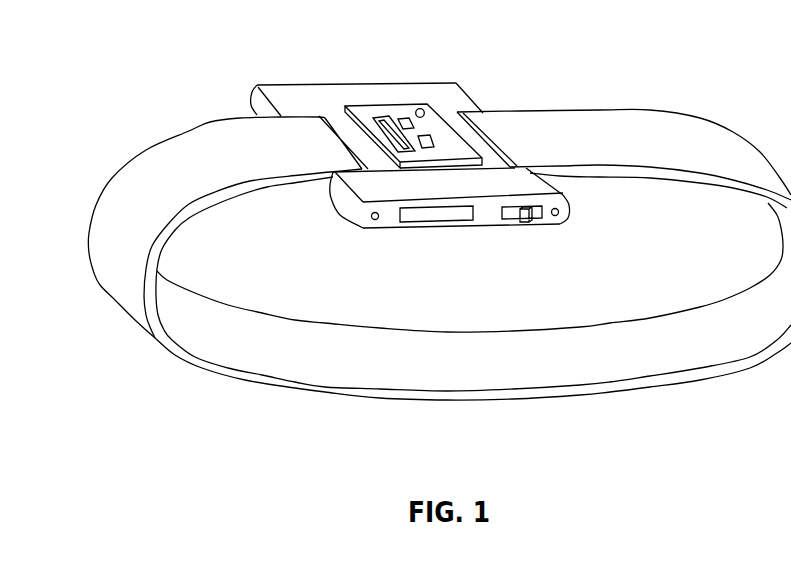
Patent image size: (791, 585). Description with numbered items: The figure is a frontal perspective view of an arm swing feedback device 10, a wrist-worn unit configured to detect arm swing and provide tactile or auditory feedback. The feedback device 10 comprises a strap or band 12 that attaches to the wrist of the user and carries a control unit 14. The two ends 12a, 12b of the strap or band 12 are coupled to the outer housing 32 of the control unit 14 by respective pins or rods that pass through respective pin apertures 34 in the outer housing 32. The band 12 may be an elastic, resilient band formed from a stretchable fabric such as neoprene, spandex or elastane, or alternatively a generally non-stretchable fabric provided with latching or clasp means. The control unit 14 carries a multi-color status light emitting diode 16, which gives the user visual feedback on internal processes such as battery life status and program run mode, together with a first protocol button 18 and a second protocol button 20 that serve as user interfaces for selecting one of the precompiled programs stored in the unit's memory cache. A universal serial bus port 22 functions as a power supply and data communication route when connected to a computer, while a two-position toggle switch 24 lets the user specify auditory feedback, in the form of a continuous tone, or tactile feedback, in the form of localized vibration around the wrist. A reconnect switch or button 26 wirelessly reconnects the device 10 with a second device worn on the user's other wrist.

The feedback device 10 is at (439, 252).
The strap or band 12 is at (439, 237).
The end of strap or band 12a is at (325, 132).
The end of strap or band 12b is at (490, 138).
The control unit 14 is at (427, 151).
The multi-color status light emitting diode 16 is at (401, 112).
The first protocol button 18 is at (430, 146).
The second protocol button 20 is at (407, 118).
The universal serial bus port 22 is at (413, 215).
The multi-position toggle switch 24 is at (528, 216).
The reconnect switch or button 26 is at (382, 118).
The outer housing 32 is at (347, 196).
The pin apertures 34 is at (373, 221).